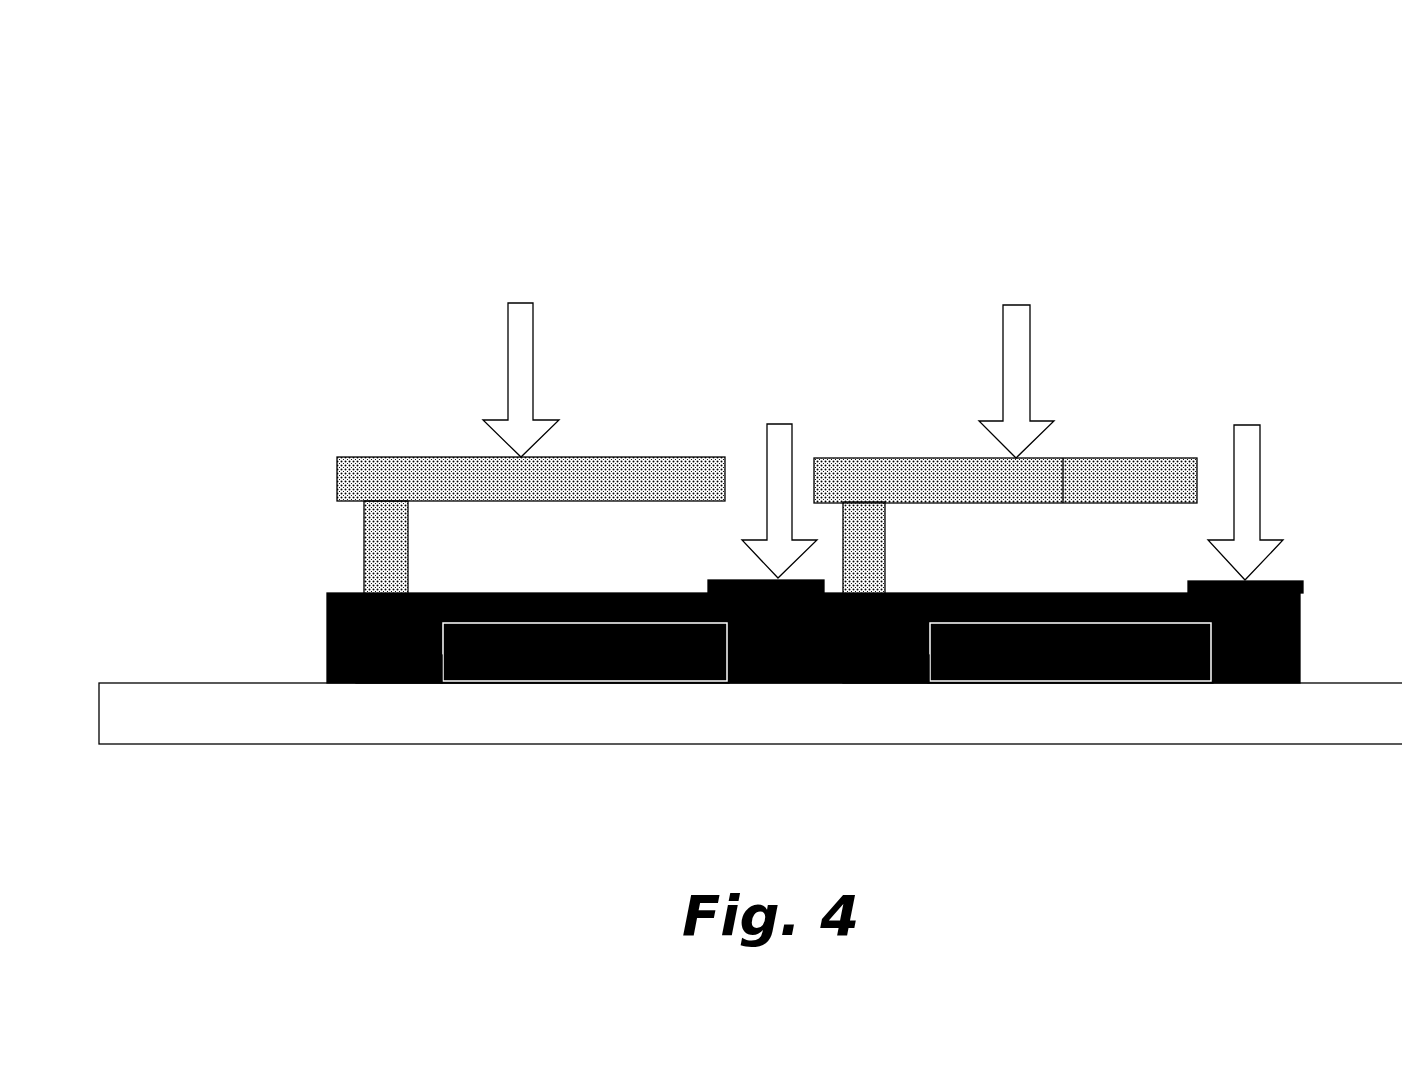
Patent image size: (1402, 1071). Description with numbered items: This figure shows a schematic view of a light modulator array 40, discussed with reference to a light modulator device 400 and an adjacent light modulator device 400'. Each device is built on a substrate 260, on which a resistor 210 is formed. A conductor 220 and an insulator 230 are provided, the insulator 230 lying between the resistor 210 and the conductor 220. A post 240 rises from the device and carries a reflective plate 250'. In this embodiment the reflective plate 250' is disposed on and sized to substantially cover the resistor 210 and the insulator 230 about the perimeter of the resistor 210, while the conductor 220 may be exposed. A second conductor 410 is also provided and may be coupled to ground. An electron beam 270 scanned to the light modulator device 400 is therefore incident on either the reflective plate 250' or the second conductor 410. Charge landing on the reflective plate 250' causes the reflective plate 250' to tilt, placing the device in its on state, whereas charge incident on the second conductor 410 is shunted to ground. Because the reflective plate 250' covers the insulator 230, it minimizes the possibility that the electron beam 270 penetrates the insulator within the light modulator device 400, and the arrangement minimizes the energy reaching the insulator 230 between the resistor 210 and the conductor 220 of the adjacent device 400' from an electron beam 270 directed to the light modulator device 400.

The light modulator array 40 is at (831, 90).
The adjacent light modulator device 400' is at (585, 202).
The light modulator device 400 is at (1077, 177).
The electron beam 270 is at (540, 360).
The reflective plate 250' is at (767, 431).
The post 240 is at (363, 548).
The second conductor 410 is at (728, 580).
The insulator 230 is at (807, 672).
The conductor 220 is at (697, 683).
The resistor 210 is at (403, 683).
The substrate 260 is at (645, 722).